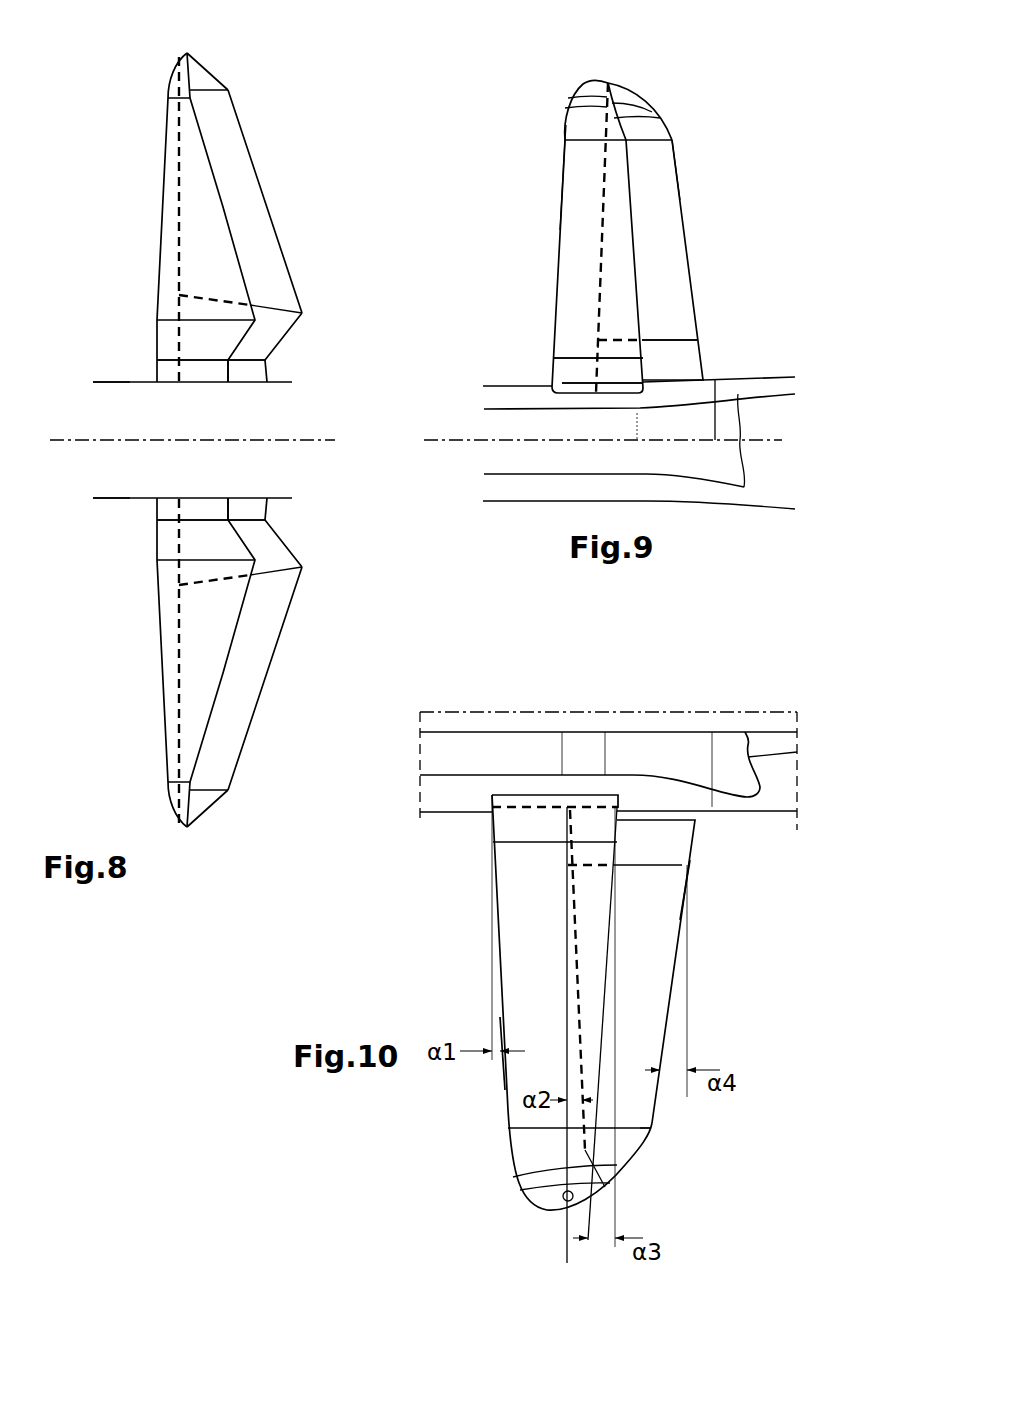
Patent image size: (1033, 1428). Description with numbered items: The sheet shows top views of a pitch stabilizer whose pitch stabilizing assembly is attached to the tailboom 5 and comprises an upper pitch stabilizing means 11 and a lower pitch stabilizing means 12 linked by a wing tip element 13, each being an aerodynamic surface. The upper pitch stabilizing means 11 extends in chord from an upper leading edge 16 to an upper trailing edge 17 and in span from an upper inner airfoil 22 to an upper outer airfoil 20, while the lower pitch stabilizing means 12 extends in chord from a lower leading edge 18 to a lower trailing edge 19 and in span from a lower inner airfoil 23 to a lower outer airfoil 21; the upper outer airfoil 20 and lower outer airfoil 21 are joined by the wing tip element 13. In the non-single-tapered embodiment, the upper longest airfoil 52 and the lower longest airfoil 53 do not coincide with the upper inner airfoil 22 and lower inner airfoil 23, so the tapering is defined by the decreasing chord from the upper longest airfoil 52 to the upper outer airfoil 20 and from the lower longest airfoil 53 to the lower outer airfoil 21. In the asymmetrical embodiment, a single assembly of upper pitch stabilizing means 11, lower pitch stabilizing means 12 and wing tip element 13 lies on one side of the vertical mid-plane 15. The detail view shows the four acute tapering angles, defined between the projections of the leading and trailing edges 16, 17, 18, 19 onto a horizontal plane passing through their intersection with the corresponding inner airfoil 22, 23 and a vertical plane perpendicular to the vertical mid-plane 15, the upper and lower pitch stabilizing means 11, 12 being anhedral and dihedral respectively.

In FIG. 8, the tailboom 5 is at (93, 415).
In FIG. 9, the tailboom 5 is at (513, 434).
In FIG. 10, the tailboom 5 is at (480, 752).
In FIG. 9, the upper pitch stabilizing means 11 is at (623, 256).
In FIG. 10, the upper pitch stabilizing means 11 is at (518, 915).
In FIG. 9, the lower pitch stabilizing means 12 is at (657, 163).
In FIG. 10, the lower pitch stabilizing means 12 is at (662, 953).
In FIG. 8, the wing tip element 13 is at (186, 58).
In FIG. 9, the wing tip element 13 is at (567, 125).
In FIG. 10, the wing tip element 13 is at (518, 1150).
In FIG. 8, the vertical mid-plane 15 is at (320, 440).
In FIG. 9, the vertical mid-plane 15 is at (766, 440).
In FIG. 10, the vertical mid-plane 15 is at (766, 732).
In FIG. 8, the upper leading edge 16 is at (163, 200).
In FIG. 9, the upper leading edge 16 is at (560, 195).
In FIG. 10, the upper leading edge 16 is at (500, 1017).
In FIG. 8, the upper trailing edge 17 is at (223, 207).
In FIG. 9, the upper trailing edge 17 is at (638, 189).
In FIG. 10, the upper trailing edge 17 is at (600, 1013).
In FIG. 8, the lower leading edge 18 is at (178, 257).
In FIG. 9, the lower leading edge 18 is at (603, 236).
In FIG. 10, the lower leading edge 18 is at (577, 955).
In FIG. 8, the lower trailing edge 19 is at (248, 145).
In FIG. 9, the lower trailing edge 19 is at (687, 214).
In FIG. 10, the lower trailing edge 19 is at (680, 920).
In FIG. 8, the upper outer airfoil 20 is at (172, 98).
In FIG. 9, the upper outer airfoil 20 is at (573, 133).
In FIG. 10, the upper outer airfoil 20 is at (518, 1128).
In FIG. 8, the lower outer airfoil 21 is at (208, 90).
In FIG. 9, the lower outer airfoil 21 is at (645, 140).
In FIG. 10, the lower outer airfoil 21 is at (635, 1128).
In FIG. 8, the upper inner airfoil 22 is at (183, 359).
In FIG. 9, the upper inner airfoil 22 is at (572, 357).
In FIG. 10, the upper inner airfoil 22 is at (518, 842).
In FIG. 8, the lower inner airfoil 23 is at (247, 360).
In FIG. 9, the lower inner airfoil 23 is at (667, 340).
In FIG. 10, the lower inner airfoil 23 is at (660, 865).
In FIG. 8, the upper longest airfoil 52 is at (202, 320).
In FIG. 8, the lower longest airfoil 53 is at (270, 303).